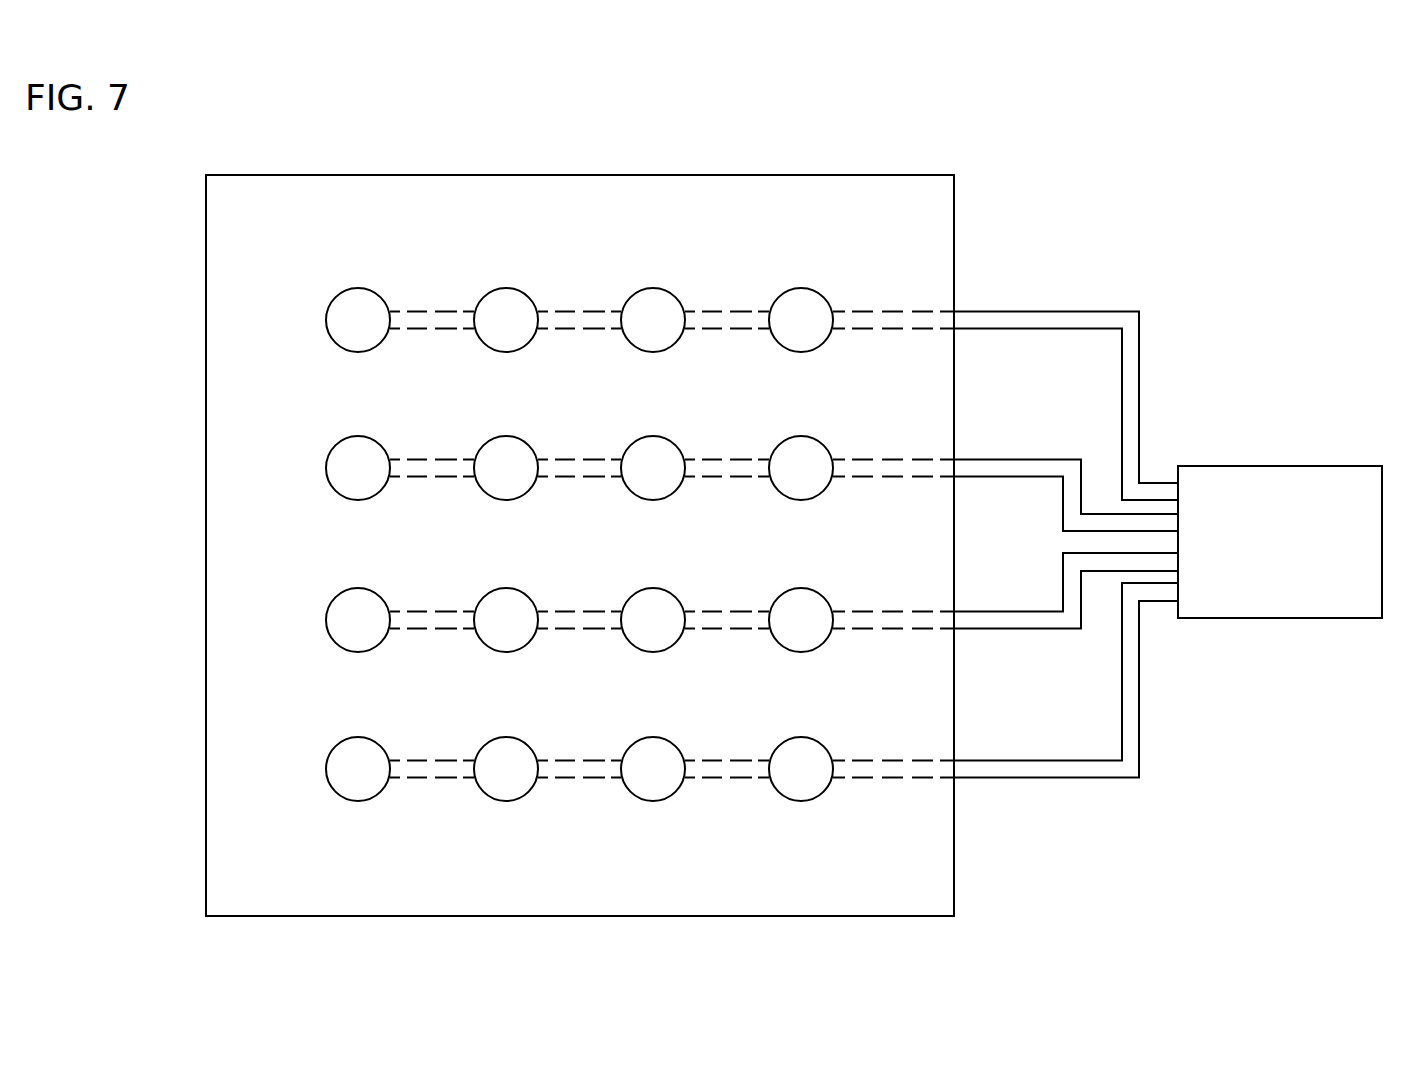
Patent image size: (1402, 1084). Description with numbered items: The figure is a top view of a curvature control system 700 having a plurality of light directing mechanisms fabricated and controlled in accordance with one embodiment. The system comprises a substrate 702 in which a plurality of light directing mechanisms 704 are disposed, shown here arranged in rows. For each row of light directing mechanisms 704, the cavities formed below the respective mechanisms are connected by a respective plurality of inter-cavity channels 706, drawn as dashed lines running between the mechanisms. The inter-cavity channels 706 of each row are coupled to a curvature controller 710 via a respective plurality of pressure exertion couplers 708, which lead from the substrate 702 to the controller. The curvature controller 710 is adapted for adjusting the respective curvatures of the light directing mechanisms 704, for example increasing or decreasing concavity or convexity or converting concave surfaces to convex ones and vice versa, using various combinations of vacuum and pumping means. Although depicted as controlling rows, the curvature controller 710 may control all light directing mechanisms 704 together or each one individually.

The curvature control system 700 is at (99, 165).
The substrate 702 is at (955, 892).
The light directing mechanisms 704 is at (357, 500).
The inter-cavity channels 706 is at (565, 478).
The pressure exertion couplers 708 is at (1007, 477).
The curvature controller 710 is at (1287, 618).